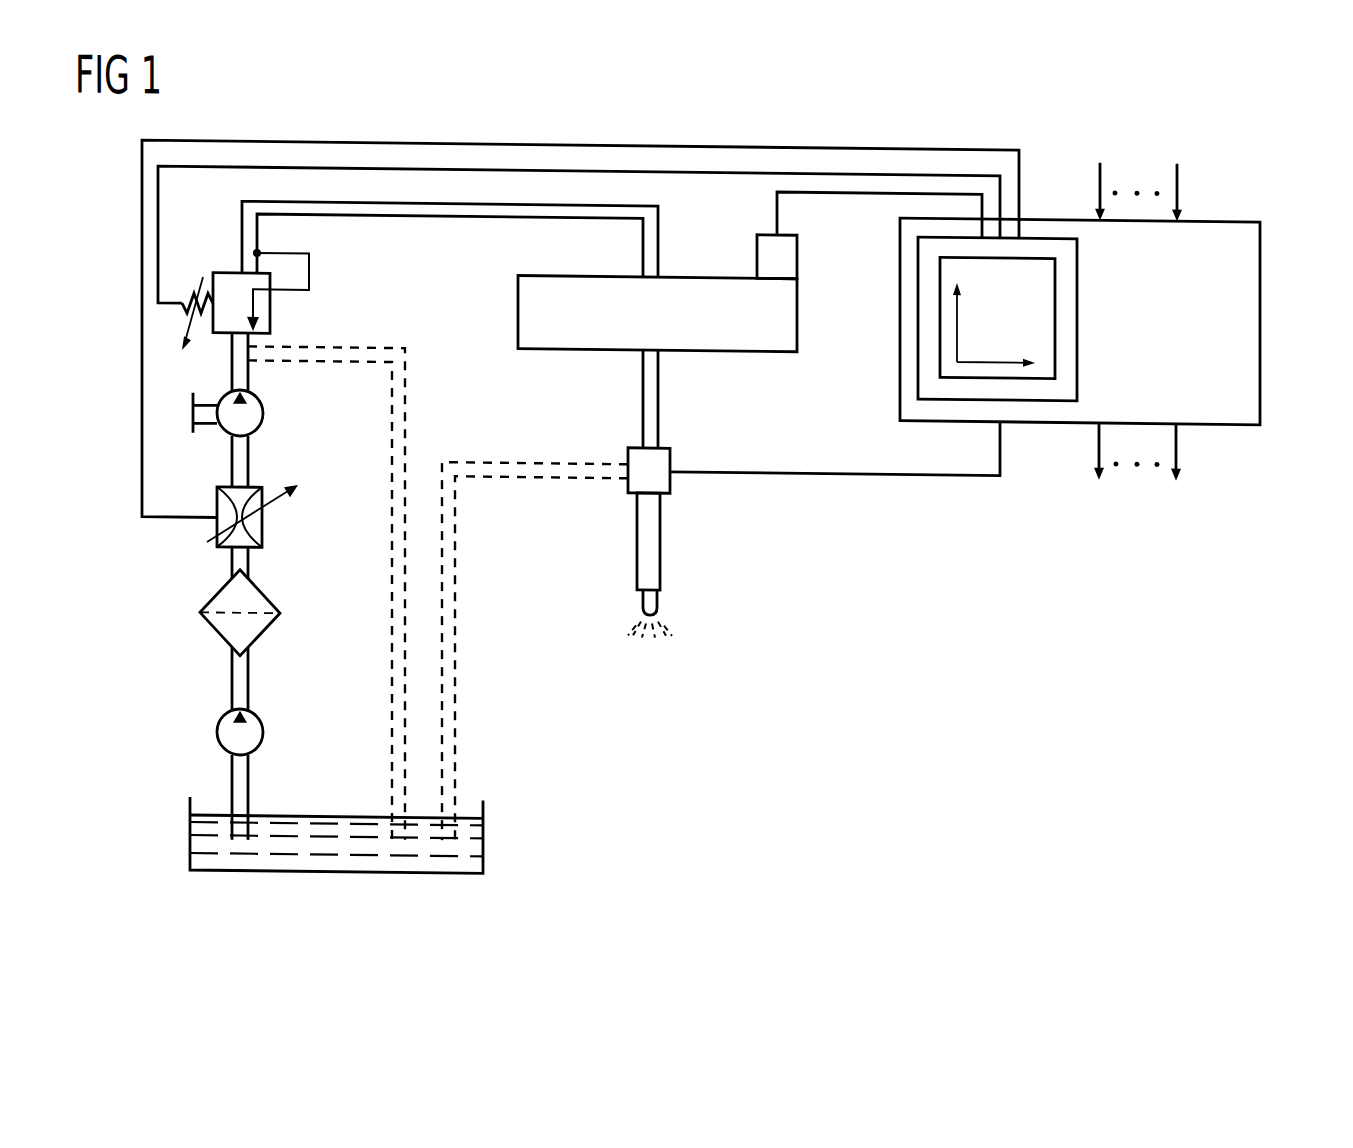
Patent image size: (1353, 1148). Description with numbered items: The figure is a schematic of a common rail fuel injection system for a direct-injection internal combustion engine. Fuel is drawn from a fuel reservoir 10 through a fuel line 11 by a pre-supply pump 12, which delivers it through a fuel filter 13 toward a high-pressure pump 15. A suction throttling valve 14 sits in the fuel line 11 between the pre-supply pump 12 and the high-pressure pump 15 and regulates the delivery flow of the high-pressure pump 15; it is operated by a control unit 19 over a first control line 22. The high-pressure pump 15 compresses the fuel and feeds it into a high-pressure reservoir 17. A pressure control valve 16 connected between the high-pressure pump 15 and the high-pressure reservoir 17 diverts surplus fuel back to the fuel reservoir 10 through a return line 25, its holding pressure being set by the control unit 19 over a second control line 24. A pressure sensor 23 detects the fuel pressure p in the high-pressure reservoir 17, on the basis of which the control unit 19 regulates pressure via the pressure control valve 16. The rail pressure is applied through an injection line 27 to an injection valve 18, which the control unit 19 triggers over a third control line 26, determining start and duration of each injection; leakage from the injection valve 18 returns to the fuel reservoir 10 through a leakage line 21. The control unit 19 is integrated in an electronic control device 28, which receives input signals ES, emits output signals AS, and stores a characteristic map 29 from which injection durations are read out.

The fuel reservoir 10 is at (326, 868).
The fuel line 11 is at (231, 776).
The pre-supply pump 12 is at (263, 731).
The fuel filter 13 is at (268, 587).
The suction throttling valve 14 is at (262, 512).
The high-pressure pump 15 is at (263, 408).
The pressure control valve 16 is at (228, 270).
The high-pressure reservoir 17 is at (705, 270).
The injection valve 18 is at (660, 532).
The control unit 19 is at (1067, 345).
The leakage line 21 is at (452, 570).
The first control line 22 is at (142, 216).
The pressure sensor 23 is at (788, 246).
The second control line 24 is at (520, 164).
The return line 25 is at (400, 383).
The third control line 26 is at (922, 464).
The injection line 27 is at (658, 386).
The electronic control device 28 is at (1260, 310).
The characteristic map 29 is at (1043, 273).